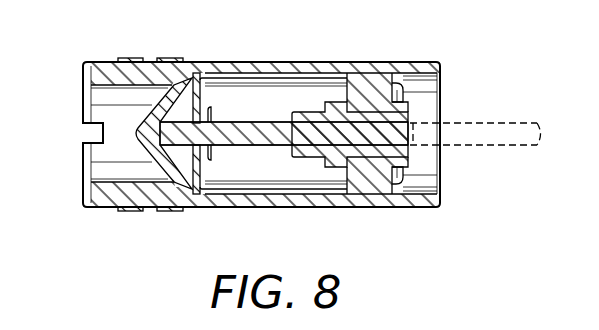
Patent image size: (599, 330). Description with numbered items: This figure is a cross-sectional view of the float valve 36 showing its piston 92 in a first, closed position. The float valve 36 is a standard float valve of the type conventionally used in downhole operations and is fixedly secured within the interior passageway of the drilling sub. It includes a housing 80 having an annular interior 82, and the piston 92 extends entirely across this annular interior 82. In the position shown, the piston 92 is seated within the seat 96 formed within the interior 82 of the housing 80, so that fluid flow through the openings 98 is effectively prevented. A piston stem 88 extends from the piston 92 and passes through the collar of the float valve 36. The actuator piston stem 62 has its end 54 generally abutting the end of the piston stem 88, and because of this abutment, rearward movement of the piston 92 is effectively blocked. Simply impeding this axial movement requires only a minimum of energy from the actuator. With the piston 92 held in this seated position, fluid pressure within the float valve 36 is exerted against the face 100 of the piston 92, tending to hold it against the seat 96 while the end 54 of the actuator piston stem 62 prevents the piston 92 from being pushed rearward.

The float valve 36 is at (388, 50).
The housing 80 is at (283, 62).
The piston 92 is at (172, 100).
The face 100 is at (140, 128).
The annular interior 82 is at (112, 162).
The seat 96 is at (187, 193).
The openings 98 is at (288, 184).
The piston stem 88 is at (402, 104).
The end 54 is at (412, 127).
The actuator piston stem 62 is at (493, 145).